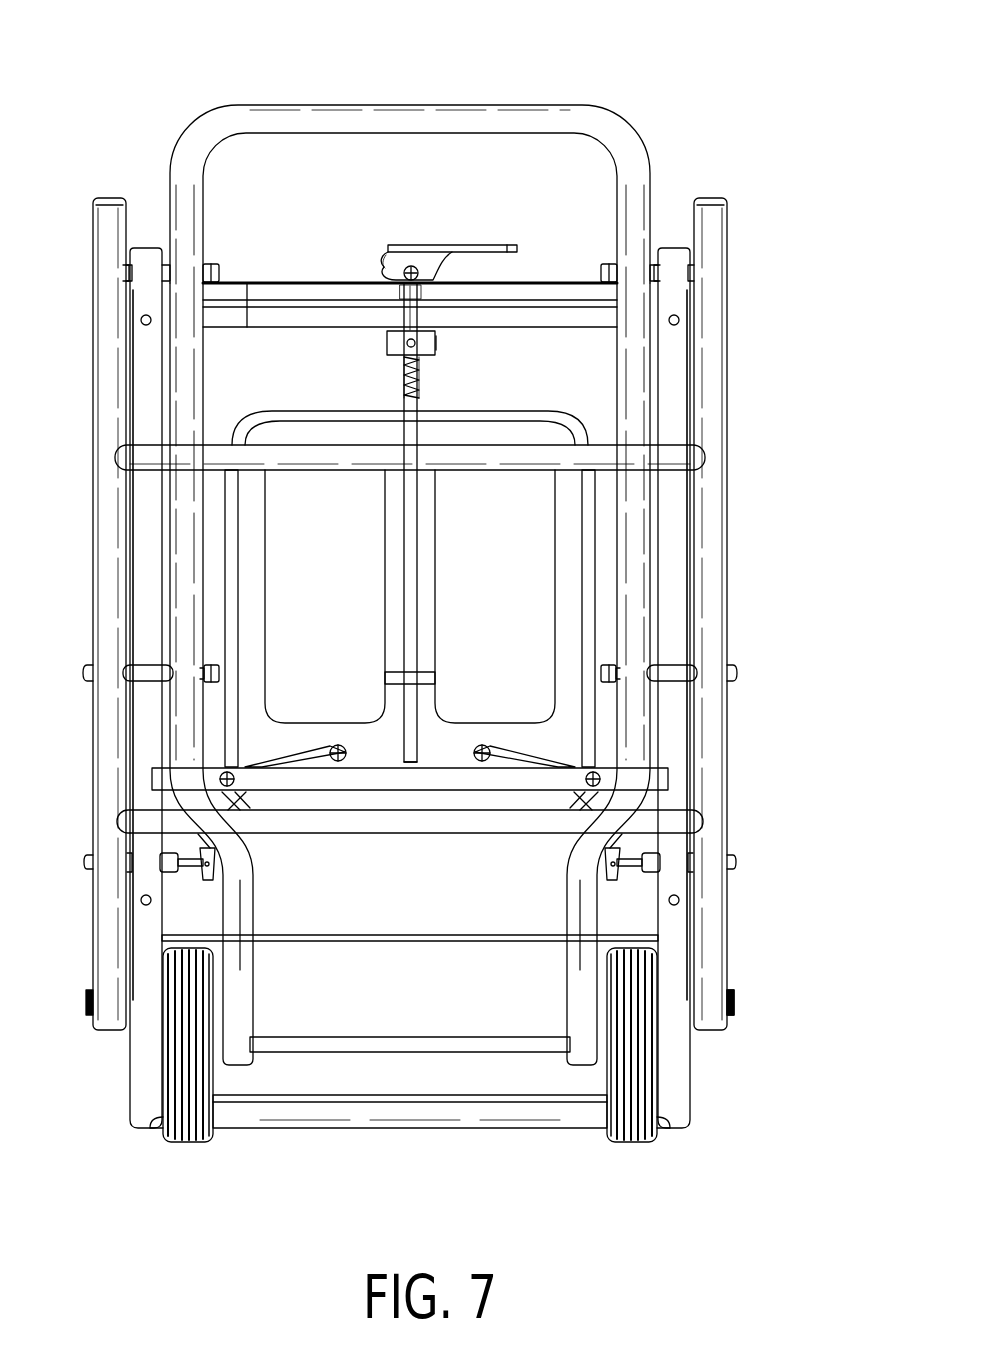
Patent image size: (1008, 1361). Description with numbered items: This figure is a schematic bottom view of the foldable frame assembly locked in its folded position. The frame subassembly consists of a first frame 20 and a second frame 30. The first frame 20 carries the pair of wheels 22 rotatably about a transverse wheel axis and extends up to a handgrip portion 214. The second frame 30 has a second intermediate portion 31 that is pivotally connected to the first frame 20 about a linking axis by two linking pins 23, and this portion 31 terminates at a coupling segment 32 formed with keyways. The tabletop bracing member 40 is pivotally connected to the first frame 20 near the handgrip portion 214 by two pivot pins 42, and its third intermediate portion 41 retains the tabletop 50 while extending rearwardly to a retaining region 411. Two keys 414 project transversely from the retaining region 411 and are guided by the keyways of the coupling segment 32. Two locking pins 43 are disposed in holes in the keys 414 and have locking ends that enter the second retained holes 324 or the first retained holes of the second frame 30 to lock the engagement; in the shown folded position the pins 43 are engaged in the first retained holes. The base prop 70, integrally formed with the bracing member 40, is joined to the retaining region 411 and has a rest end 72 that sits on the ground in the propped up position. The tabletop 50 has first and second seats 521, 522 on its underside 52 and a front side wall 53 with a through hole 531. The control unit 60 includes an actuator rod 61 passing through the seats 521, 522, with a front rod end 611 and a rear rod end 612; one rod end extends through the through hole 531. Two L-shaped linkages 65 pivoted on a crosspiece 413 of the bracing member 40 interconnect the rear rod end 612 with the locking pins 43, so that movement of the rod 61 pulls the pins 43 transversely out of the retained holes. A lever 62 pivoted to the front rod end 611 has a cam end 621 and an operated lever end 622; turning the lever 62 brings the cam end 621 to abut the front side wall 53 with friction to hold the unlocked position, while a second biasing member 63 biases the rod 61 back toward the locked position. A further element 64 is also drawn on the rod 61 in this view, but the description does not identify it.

The first frame 20 is at (627, 110).
The handgrip portion 214 is at (574, 114).
The wheels 22 is at (188, 1142).
The linking pins 23 is at (85, 685).
The second frame 30 is at (734, 366).
The second intermediate portion 31 is at (705, 755).
The coupling segment 32 is at (696, 950).
The second retained holes 324 is at (735, 1000).
The locking pins 43 is at (735, 862).
The tabletop bracing member 40 is at (690, 500).
The third intermediate portion 41 is at (677, 558).
The retaining region 411 is at (672, 846).
The crosspiece 413 is at (414, 782).
The keys 414 is at (695, 867).
The pivot pins 42 is at (607, 265).
The tabletop 50 is at (277, 282).
The underside 52 is at (233, 374).
The first seat 521 is at (436, 342).
The second seat 522 is at (434, 678).
The front side wall 53 is at (247, 283).
The through hole 531 is at (420, 300).
The control unit 60 is at (423, 240).
The actuator rod 61 is at (418, 538).
The front rod end 611 is at (408, 298).
The rear rod end 612 is at (447, 753).
The lever 62 is at (453, 246).
The cam end 621 is at (400, 257).
The operated lever end 622 is at (497, 246).
The second biasing member 63 is at (420, 385).
The nut block 64 is at (387, 342).
The L-shaped linkages 65 is at (300, 762).
The base prop 70 is at (527, 1133).
The rest end 72 is at (445, 1118).